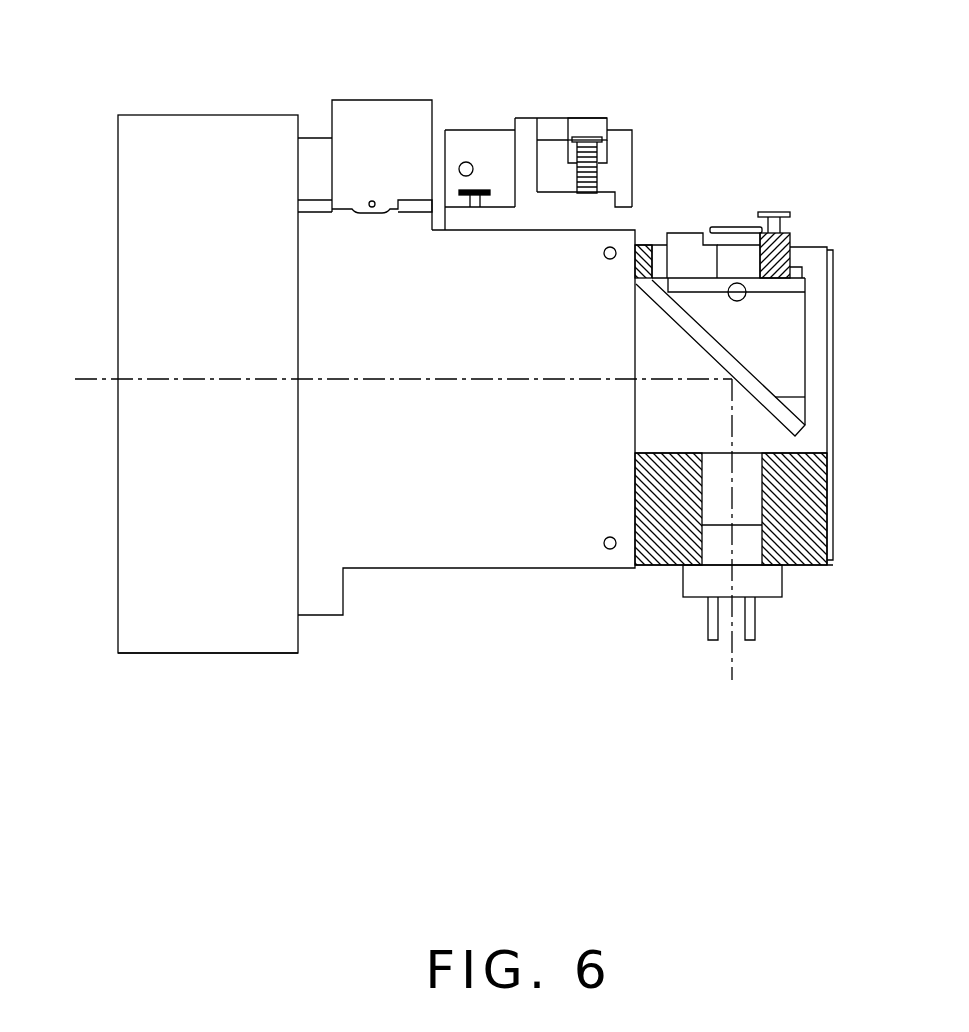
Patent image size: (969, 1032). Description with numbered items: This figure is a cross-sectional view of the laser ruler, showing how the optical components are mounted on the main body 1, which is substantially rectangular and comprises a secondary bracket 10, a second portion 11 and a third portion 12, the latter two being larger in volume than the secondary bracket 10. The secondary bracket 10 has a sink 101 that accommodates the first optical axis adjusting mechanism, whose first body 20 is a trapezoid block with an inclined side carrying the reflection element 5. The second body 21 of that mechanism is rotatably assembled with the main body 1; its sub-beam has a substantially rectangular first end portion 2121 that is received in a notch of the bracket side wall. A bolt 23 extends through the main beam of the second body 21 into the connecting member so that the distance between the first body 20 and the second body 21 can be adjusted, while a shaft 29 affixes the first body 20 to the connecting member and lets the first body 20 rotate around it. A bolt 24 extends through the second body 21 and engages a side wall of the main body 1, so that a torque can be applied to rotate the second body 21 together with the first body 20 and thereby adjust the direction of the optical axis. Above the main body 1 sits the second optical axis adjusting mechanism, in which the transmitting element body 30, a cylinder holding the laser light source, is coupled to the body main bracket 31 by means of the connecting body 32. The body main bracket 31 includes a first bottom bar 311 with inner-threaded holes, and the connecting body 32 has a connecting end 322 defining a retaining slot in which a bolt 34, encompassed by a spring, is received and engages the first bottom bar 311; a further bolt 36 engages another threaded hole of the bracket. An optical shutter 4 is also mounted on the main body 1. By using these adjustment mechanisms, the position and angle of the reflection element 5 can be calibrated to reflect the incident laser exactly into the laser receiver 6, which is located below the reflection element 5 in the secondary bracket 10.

The main body 1 is at (164, 181).
The optical shutter 4 is at (362, 120).
The reflection element 5 is at (780, 410).
The laser receiver 6 is at (748, 542).
The secondary bracket 10 is at (808, 567).
The second portion 11 is at (488, 570).
The third portion 12 is at (210, 654).
The first body 20 is at (781, 346).
The second body 21 is at (683, 233).
The bolt 23 is at (738, 229).
The bolt 24 is at (784, 218).
The shaft 29 is at (745, 298).
The transmitting element body 30 is at (624, 170).
The body main bracket 31 is at (523, 120).
The connecting body 32 is at (580, 123).
The bolt 34 is at (593, 137).
The bolt 36 is at (473, 203).
The sink 101 is at (813, 388).
The first bottom bar 311 is at (527, 213).
The connecting end 322 is at (604, 153).
The first end portion 2121 is at (788, 240).